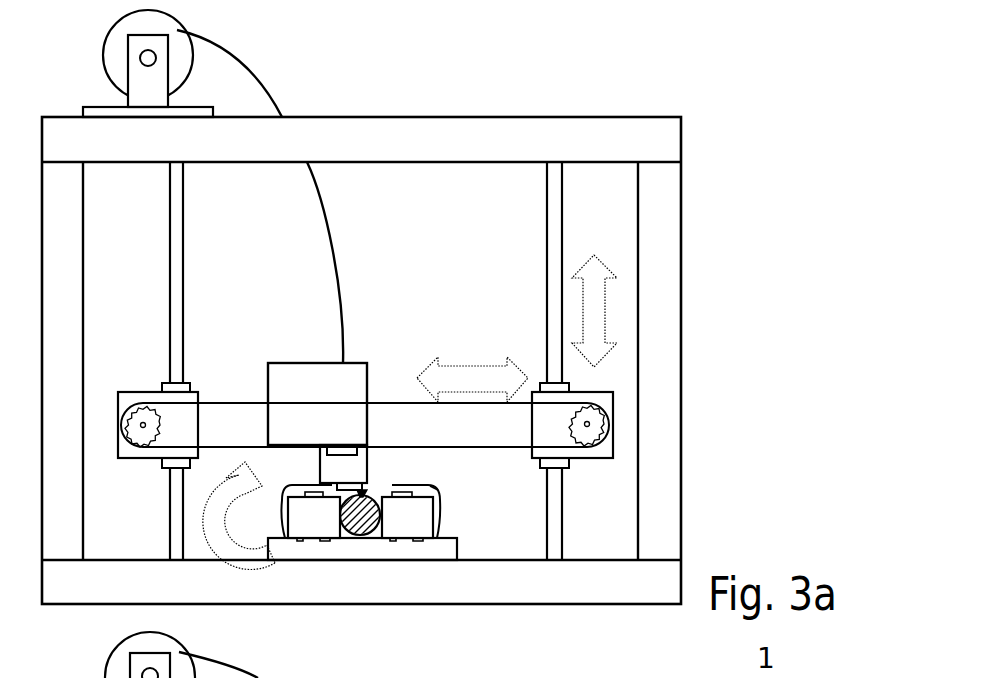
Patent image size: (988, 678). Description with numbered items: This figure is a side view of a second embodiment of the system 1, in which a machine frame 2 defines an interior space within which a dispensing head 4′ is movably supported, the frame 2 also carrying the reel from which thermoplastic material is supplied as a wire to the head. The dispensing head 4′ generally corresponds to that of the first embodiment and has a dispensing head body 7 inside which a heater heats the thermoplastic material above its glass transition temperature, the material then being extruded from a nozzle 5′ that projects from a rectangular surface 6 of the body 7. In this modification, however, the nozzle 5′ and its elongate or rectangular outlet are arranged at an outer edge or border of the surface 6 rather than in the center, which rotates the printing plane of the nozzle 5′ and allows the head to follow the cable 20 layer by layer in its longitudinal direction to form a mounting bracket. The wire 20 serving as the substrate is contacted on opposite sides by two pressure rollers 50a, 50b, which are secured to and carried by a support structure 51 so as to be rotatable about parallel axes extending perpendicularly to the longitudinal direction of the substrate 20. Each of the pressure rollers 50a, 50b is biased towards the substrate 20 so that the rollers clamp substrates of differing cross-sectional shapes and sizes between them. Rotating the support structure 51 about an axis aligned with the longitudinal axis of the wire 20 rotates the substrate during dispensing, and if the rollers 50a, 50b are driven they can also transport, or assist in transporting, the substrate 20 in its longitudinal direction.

The system 1 is at (724, 93).
The machine frame 2 is at (667, 333).
The dispensing head 4′ is at (352, 383).
The nozzle 5′ is at (348, 463).
The surface 6 is at (287, 458).
The dispensing head body 7 is at (288, 383).
The wire 20 is at (365, 530).
The pressure roller 50a is at (312, 523).
The pressure roller 50b is at (417, 523).
The support structure 51 is at (435, 488).